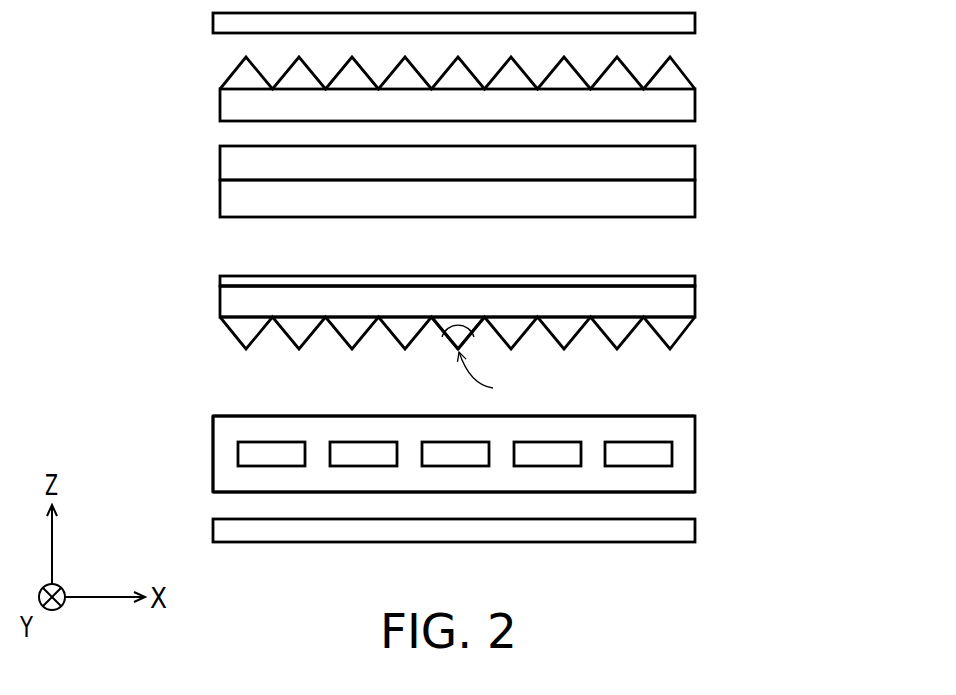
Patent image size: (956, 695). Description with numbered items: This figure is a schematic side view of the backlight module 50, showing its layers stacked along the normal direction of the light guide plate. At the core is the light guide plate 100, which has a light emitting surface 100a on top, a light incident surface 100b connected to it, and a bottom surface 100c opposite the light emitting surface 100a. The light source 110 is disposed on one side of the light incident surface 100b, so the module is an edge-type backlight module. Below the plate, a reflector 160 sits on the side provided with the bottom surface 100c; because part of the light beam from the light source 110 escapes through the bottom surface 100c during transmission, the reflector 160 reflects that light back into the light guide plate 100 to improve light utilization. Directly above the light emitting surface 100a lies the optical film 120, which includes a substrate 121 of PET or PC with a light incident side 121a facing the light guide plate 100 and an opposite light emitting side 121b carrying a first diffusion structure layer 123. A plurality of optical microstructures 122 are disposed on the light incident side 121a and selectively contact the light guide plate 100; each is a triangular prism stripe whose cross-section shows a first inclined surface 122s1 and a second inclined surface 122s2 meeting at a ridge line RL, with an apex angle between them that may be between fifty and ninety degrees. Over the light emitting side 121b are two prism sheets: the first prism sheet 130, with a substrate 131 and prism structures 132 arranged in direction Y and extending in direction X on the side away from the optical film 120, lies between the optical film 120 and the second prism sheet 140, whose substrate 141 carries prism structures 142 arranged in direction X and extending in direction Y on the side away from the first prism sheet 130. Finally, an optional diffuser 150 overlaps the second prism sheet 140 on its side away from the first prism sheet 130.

The backlight module 50 is at (850, 608).
The light guide plate 100 is at (683, 438).
The light emitting surface 100a is at (247, 414).
The light incident surface 100b is at (252, 428).
The bottom surface 100c is at (248, 493).
The light source 110 is at (672, 457).
The optical film 120 is at (478, 317).
The substrate 121 is at (672, 303).
The light incident side 121a is at (243, 320).
The light emitting side 121b is at (243, 283).
The optical microstructures 122 is at (673, 330).
The first inclined surface 122s1 is at (449, 340).
The second inclined surface 122s2 is at (475, 346).
The first diffusion structure layer 123 is at (680, 280).
The ridge line RL is at (492, 378).
The first prism sheet 130 is at (530, 181).
The substrate 131 is at (673, 199).
The prism structures 132 is at (673, 166).
The second prism sheet 140 is at (530, 83).
The substrate 141 is at (673, 107).
The prism structures 142 is at (675, 82).
The diffuser 150 is at (673, 24).
The reflector 160 is at (673, 531).